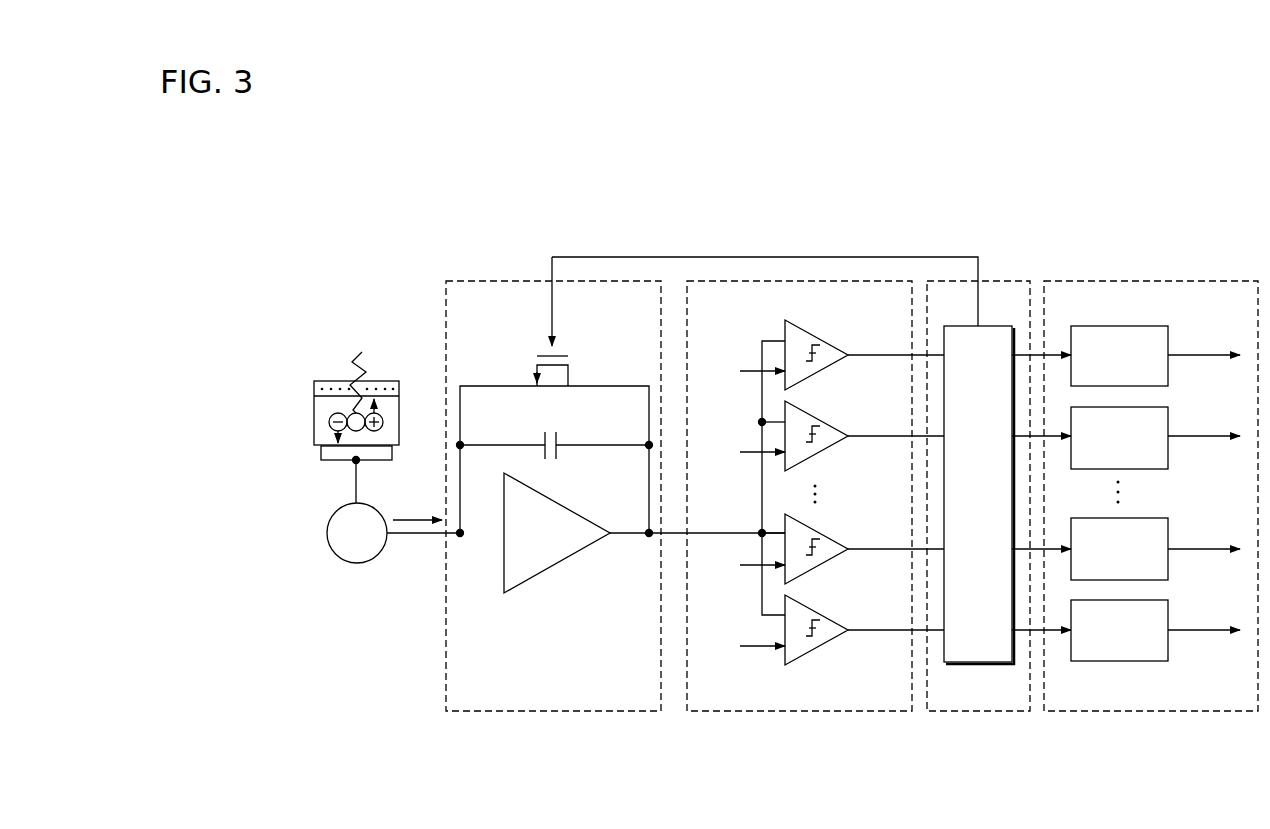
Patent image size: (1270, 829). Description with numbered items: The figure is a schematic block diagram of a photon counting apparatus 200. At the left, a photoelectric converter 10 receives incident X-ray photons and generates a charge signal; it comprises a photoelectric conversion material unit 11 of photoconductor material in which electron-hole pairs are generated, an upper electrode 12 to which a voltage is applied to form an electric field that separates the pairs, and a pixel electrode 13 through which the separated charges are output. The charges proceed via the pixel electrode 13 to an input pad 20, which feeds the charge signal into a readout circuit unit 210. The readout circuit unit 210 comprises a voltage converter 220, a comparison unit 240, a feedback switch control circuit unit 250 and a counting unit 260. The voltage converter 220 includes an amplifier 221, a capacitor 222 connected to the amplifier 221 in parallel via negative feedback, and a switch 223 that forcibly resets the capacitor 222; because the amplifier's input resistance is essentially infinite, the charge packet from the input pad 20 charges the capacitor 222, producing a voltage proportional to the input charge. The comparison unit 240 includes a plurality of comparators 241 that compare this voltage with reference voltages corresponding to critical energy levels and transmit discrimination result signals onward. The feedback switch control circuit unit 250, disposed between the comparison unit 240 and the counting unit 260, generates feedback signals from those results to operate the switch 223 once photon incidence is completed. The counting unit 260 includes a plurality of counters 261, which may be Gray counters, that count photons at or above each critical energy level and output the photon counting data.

The photoelectric converter 10 is at (347, 384).
The photoelectric conversion material unit 11 is at (380, 420).
The upper electrode 12 is at (392, 388).
The pixel electrode 13 is at (393, 452).
The input pad 20 is at (357, 563).
The photon counting apparatus 200 is at (1136, 256).
The readout circuit unit 210 is at (852, 542).
The voltage converter 220 is at (712, 521).
The amplifier 221 is at (559, 503).
The capacitor 222 is at (559, 437).
The switch 223 is at (569, 374).
The comparison unit 240 is at (815, 533).
The comparator 241 is at (818, 336).
The feedback switch control circuit unit 250 is at (977, 714).
The counting unit 260 is at (1135, 533).
The counter 261 is at (1122, 326).